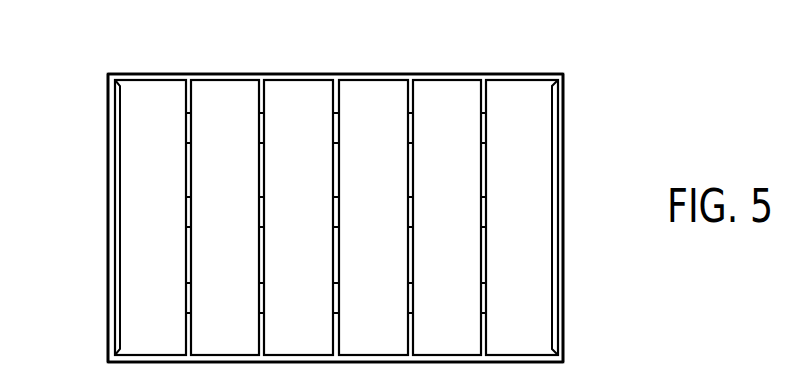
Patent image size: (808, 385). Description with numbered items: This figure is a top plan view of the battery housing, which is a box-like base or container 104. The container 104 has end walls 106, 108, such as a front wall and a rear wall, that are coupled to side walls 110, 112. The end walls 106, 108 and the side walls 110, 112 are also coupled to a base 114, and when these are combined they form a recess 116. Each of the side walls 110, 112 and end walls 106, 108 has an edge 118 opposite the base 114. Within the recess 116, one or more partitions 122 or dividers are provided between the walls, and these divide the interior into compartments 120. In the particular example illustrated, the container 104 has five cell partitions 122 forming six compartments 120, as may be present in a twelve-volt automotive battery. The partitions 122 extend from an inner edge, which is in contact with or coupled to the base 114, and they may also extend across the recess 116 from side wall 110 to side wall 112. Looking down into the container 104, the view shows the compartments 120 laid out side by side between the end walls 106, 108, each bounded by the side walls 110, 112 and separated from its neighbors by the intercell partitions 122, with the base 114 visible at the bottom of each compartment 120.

The container 104 is at (632, 128).
The end wall 106 is at (112, 215).
The end wall 108 is at (558, 183).
The side wall 110 is at (335, 363).
The side wall 112 is at (335, 78).
The base 114 is at (391, 230).
The recess 116 is at (448, 311).
The edge 118 is at (560, 98).
The compartments 120 is at (212, 114).
The partitions 122 is at (263, 127).